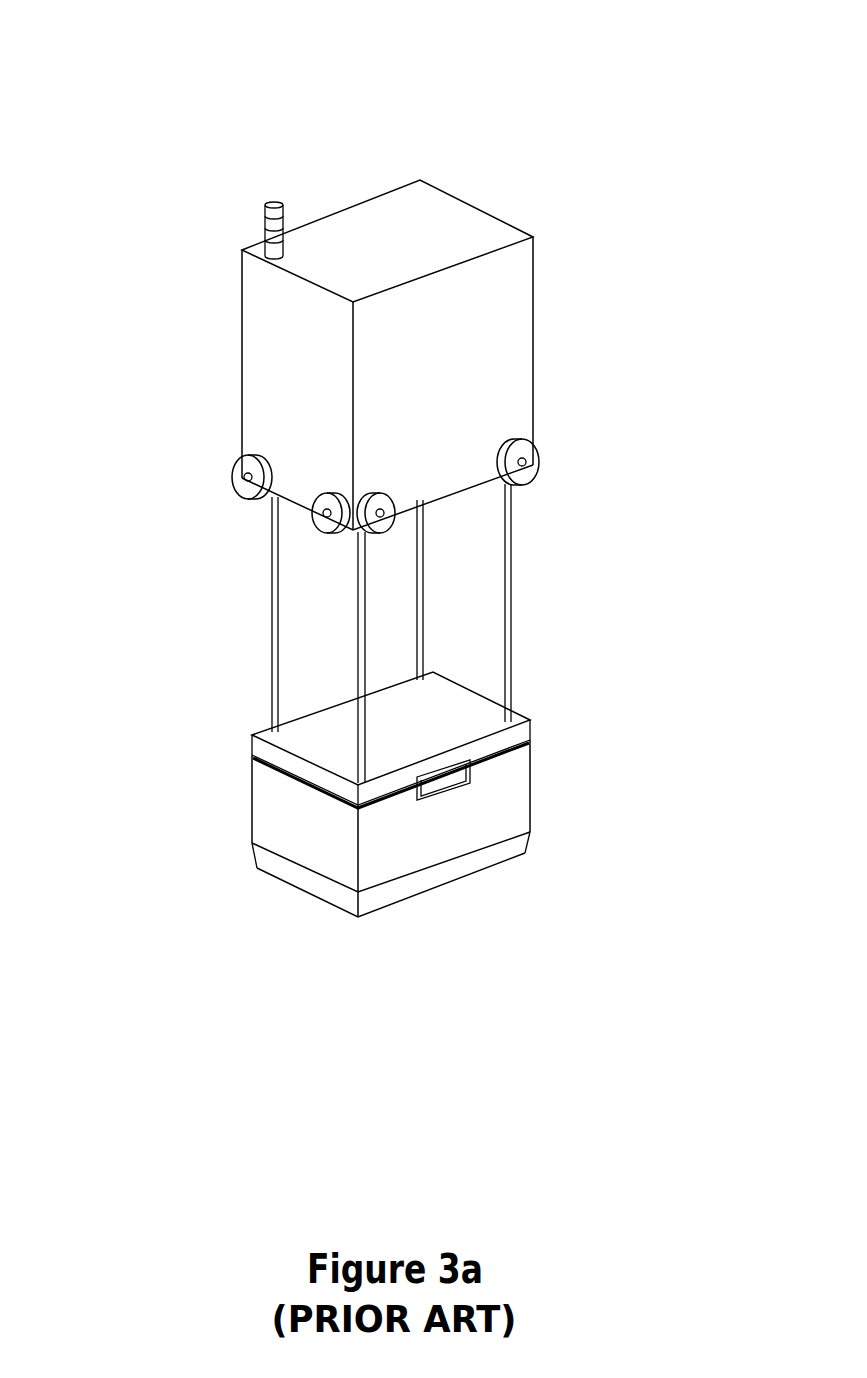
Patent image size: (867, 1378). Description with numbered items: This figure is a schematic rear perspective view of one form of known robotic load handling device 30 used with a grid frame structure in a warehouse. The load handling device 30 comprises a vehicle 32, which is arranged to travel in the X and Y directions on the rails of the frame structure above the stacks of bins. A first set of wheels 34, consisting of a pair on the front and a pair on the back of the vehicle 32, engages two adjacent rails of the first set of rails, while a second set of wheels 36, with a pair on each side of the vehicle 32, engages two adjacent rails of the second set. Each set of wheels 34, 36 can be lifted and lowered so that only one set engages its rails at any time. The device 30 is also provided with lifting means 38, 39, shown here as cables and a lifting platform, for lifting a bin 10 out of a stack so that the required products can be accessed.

The load handling device 30 is at (206, 130).
The vehicle 32 is at (467, 330).
The first set of wheels 34 is at (532, 462).
The second set of wheels 36 is at (247, 460).
The lifting means 38 is at (508, 598).
The lifting means 39 is at (467, 722).
The bin 10 is at (500, 817).